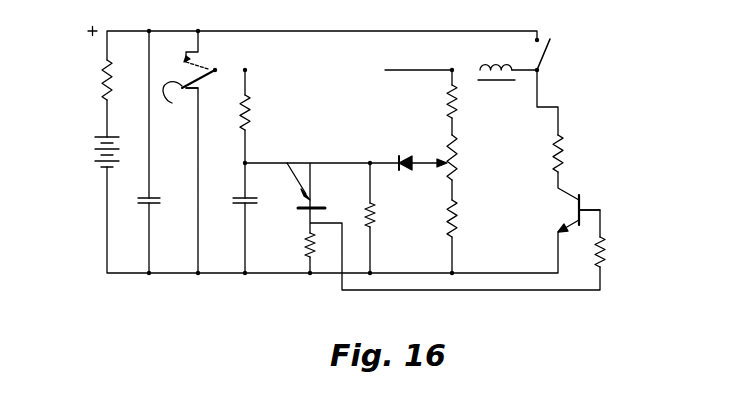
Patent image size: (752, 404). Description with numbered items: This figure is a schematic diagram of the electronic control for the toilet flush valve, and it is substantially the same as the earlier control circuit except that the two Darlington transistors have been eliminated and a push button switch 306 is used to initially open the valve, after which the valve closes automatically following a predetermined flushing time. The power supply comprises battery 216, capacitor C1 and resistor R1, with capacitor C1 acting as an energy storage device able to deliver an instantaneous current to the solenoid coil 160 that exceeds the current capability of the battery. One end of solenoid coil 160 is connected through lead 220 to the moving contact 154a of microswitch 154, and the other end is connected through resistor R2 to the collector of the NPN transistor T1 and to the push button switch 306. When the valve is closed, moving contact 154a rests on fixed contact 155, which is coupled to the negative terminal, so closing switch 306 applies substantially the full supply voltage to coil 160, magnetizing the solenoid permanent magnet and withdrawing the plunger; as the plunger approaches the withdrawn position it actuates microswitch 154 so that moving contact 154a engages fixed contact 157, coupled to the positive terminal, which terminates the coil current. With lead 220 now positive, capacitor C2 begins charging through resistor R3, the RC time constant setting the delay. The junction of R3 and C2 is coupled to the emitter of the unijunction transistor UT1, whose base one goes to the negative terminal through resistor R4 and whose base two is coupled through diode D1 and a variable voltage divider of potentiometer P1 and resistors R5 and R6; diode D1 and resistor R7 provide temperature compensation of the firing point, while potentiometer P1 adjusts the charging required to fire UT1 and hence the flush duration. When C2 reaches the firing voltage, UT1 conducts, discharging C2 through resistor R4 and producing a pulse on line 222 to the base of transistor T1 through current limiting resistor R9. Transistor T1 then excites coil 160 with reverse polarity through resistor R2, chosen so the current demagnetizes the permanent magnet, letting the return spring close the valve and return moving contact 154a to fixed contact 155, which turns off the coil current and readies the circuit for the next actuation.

The fixed contact 157 is at (186, 60).
The microswitch 154 is at (198, 58).
The moving contact 154a is at (169, 101).
The fixed contact 155 is at (199, 88).
The battery 216 is at (106, 137).
The lead 220 is at (403, 70).
The solenoid coil 160 is at (501, 67).
The push button switch 306 is at (546, 56).
The line 222 is at (601, 214).
The resistor R1 is at (89, 80).
The capacitor C1 is at (158, 203).
The capacitor C2 is at (233, 200).
The resistor R3 is at (257, 112).
The unijunction transistor UT1 is at (311, 176).
The resistor R4 is at (294, 245).
The resistor R7 is at (382, 217).
The diode D1 is at (399, 158).
The resistor R5 is at (463, 101).
The potentiometer P1 is at (458, 157).
The resistor R6 is at (464, 218).
The resistor R2 is at (571, 153).
The transistor T1 is at (584, 210).
The resistor R9 is at (611, 252).